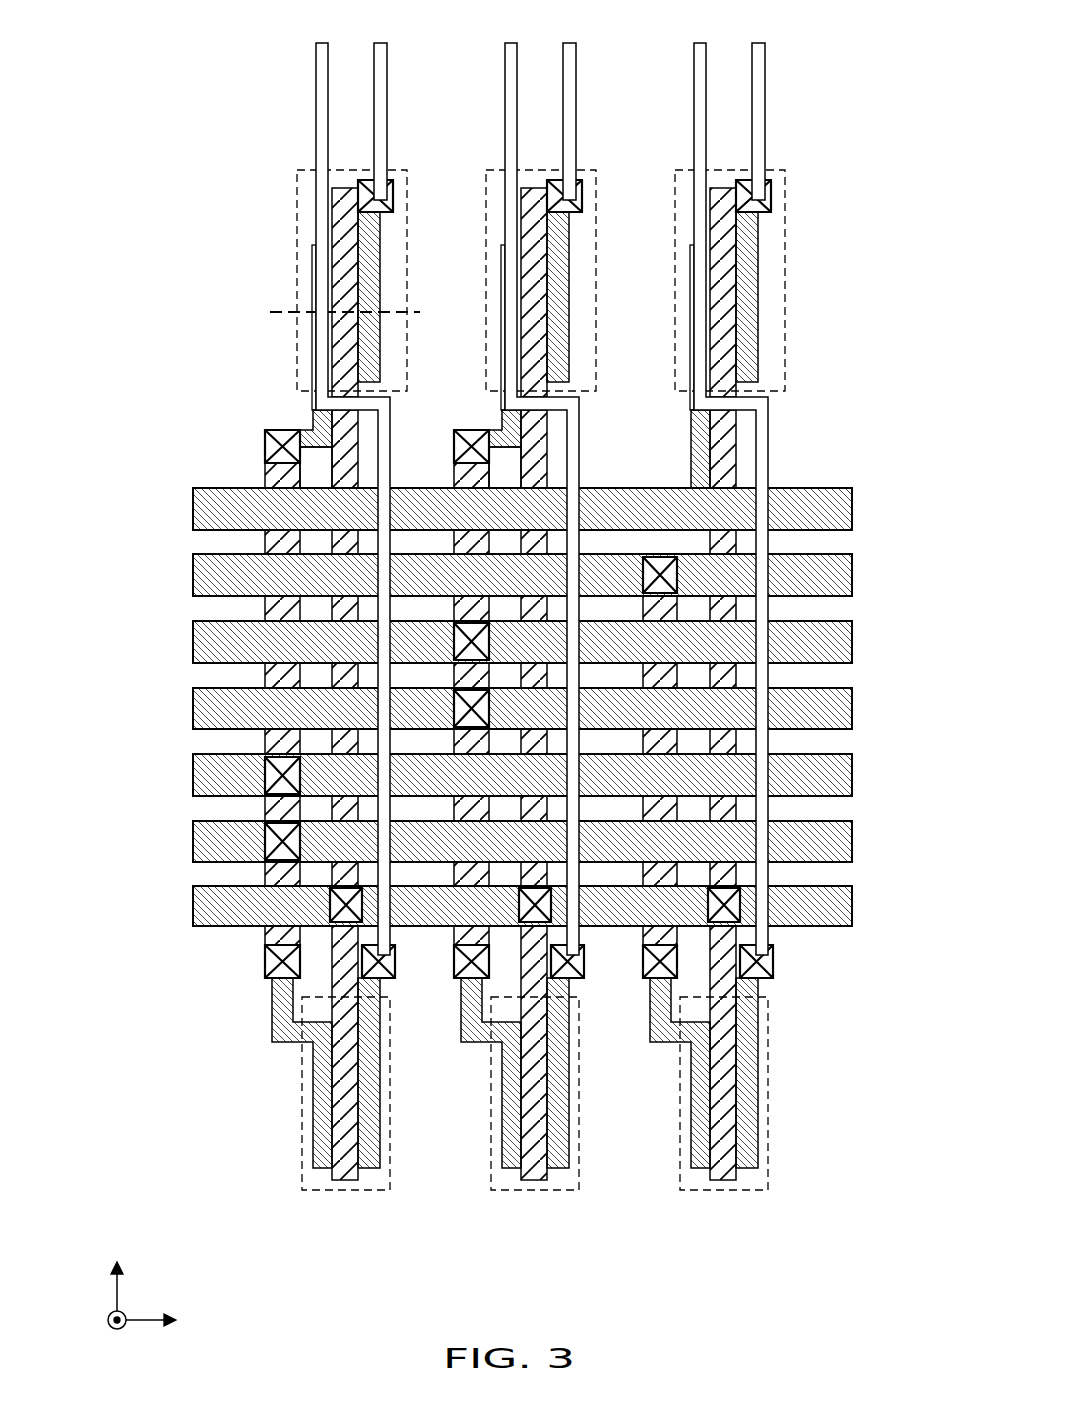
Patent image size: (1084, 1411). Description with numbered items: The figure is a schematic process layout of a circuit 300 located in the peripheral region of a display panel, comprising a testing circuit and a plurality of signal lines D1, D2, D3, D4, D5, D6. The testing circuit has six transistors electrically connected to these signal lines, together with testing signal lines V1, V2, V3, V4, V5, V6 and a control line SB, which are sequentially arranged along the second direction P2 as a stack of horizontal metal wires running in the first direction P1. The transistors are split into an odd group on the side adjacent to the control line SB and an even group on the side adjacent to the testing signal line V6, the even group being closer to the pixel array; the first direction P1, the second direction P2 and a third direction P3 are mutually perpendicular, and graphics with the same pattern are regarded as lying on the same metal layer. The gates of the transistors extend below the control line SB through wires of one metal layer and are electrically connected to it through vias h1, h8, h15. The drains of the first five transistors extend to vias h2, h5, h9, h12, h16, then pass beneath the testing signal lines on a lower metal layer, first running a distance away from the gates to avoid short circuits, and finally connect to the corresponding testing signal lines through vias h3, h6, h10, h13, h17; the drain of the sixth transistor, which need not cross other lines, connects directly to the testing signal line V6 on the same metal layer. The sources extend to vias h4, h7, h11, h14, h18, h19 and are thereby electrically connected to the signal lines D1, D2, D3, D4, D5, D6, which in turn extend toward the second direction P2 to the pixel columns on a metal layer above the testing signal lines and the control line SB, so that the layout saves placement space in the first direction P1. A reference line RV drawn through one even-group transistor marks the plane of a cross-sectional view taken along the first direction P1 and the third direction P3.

The circuit 300 is at (521, 652).
The signal line D1 is at (316, 57).
The signal line D2 is at (374, 57).
The signal line D3 is at (505, 57).
The signal line D4 is at (563, 57).
The signal line D5 is at (694, 57).
The signal line D6 is at (752, 57).
The via h1 is at (346, 905).
The via h2 is at (282, 963).
The via h3 is at (282, 842).
The via h4 is at (378, 962).
The via h5 is at (275, 447).
The via h6 is at (282, 774).
The via h7 is at (393, 192).
The via h8 is at (552, 906).
The via h9 is at (456, 962).
The via h10 is at (466, 707).
The via h11 is at (567, 964).
The via h12 is at (465, 447).
The via h13 is at (466, 640).
The via h14 is at (582, 192).
The via h15 is at (741, 906).
The via h16 is at (655, 976).
The via h17 is at (662, 560).
The via h18 is at (757, 964).
The via h19 is at (771, 192).
The testing signal line V1 is at (851, 853).
The testing signal line V2 is at (851, 787).
The testing signal line V3 is at (851, 720).
The testing signal line V4 is at (851, 654).
The testing signal line V5 is at (851, 587).
The testing signal line V6 is at (851, 521).
The control line SB is at (851, 918).
The reference line RV is at (305, 311).
The first direction P1 is at (169, 1322).
The second direction P2 is at (122, 1268).
The third direction P3 is at (97, 1322).